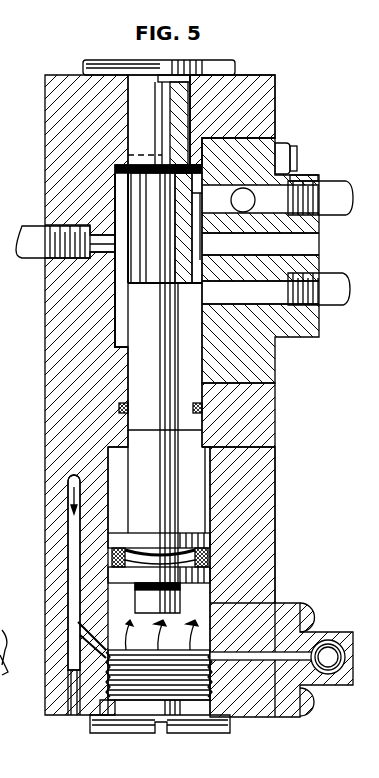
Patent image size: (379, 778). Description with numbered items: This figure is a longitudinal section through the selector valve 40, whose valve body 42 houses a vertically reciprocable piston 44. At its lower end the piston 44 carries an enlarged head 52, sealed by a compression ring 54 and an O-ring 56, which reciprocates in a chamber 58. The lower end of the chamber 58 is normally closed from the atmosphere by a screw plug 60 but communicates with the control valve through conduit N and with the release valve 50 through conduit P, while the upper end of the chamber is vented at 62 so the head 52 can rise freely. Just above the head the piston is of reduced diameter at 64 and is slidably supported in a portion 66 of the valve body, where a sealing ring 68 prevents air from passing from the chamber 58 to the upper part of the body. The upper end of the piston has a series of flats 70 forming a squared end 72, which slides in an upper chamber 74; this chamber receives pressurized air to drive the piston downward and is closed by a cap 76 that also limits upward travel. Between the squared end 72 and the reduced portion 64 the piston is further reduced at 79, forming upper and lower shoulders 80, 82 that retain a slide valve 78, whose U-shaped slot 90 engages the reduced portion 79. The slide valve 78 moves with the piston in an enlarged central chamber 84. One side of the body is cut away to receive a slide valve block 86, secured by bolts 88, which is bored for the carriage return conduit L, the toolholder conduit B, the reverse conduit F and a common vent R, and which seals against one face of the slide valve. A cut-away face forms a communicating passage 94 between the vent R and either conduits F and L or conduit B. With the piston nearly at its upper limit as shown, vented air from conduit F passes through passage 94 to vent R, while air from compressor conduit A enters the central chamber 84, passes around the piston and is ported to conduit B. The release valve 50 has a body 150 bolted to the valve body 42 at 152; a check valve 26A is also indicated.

The selector valve 40 is at (47, 70).
The valve body 42 is at (45, 105).
The piston 44 is at (159, 491).
The release valve 50 is at (337, 620).
The enlarged head 52 is at (159, 558).
The compression ring 54 is at (208, 552).
The O-ring 56 is at (210, 563).
The chamber 58 is at (208, 505).
The screw plug 60 is at (182, 692).
The vent 62 is at (258, 455).
The reduced diameter portion 64 is at (207, 478).
The supporting portion 66 is at (196, 432).
The sealing ring 68 is at (203, 408).
The flats 70 is at (175, 108).
The squared end 72 is at (143, 90).
The upper chamber 74 is at (195, 108).
The cap 76 is at (213, 60).
The slide valve 78 is at (172, 199).
The reduced portion 79 is at (165, 228).
The upper shoulder 80 is at (196, 192).
The lower shoulder 82 is at (192, 288).
The central chamber 84 is at (122, 294).
The slide valve block 86 is at (285, 150).
The bolts 88 is at (298, 159).
The U-shaped slot 90 is at (178, 257).
The communicating passage 94 is at (204, 243).
The release valve body 150 is at (315, 630).
The bolted attachment 152 is at (308, 705).
The check valve 26A is at (12, 644).
The air compressor conduit A is at (30, 225).
The toolholder conduit B is at (332, 303).
The carriage feed operating cylinder reverse conduit F is at (335, 190).
The carriage return conduit L is at (307, 171).
The conduit N is at (68, 592).
The conduit P is at (246, 655).
The vent R is at (321, 243).